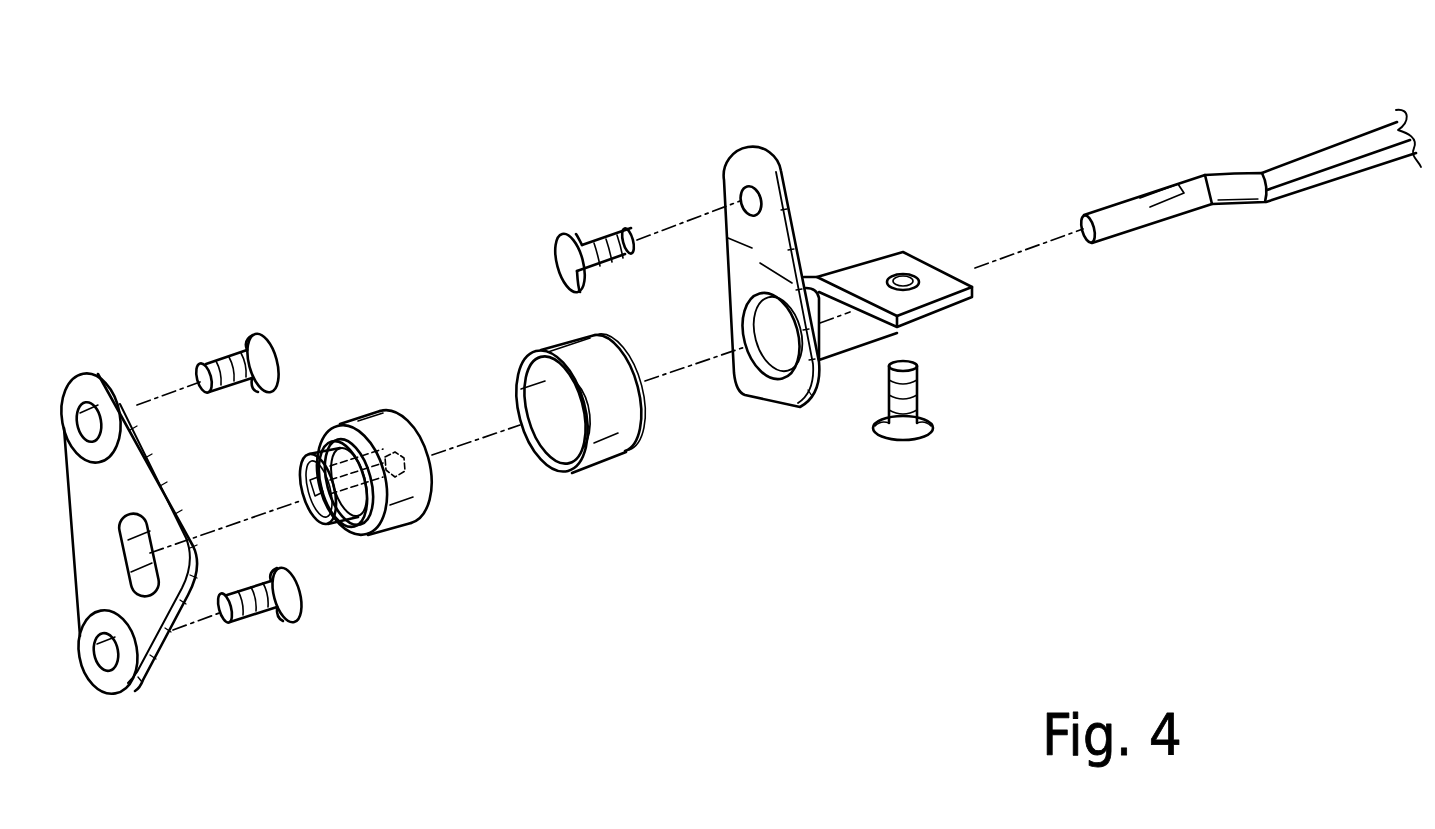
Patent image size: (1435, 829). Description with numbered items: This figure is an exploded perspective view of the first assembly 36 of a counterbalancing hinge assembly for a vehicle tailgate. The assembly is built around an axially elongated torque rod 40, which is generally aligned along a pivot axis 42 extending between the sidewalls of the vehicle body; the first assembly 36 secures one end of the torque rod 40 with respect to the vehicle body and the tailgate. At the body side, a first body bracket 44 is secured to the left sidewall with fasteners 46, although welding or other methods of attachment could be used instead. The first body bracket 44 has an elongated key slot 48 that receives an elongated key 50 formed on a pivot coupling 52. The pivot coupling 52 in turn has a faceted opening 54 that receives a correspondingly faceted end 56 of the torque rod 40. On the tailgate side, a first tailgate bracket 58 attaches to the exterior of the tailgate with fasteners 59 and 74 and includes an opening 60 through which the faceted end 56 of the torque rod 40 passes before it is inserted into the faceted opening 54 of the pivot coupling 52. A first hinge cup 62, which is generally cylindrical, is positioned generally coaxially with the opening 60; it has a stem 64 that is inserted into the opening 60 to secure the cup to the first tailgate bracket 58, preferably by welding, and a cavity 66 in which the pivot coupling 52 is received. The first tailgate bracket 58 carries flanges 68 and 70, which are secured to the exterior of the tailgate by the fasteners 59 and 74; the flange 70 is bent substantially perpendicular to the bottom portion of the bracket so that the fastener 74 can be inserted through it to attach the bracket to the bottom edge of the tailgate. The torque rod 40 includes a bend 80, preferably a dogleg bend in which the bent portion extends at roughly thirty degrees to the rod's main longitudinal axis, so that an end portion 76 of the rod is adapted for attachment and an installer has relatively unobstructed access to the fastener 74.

The first assembly 36 is at (492, 158).
The torque rod 40 is at (1350, 143).
The pivot axis 42 is at (962, 238).
The first body bracket 44 is at (140, 686).
The fasteners 46 is at (263, 335).
The elongated key slot 48 is at (143, 537).
The elongated key 50 is at (342, 517).
The pivot coupling 52 is at (392, 530).
The faceted opening 54 is at (417, 468).
The faceted end 56 is at (1112, 193).
The first tailgate bracket 58 is at (788, 400).
The fastener 59 is at (565, 231).
The opening 60 is at (750, 320).
The first hinge cup 62 is at (606, 450).
The stem 64 is at (643, 375).
The cavity 66 is at (558, 447).
The flange 68 is at (747, 152).
The flange 70 is at (943, 312).
The fastener 74 is at (903, 440).
The end portion 76 is at (1197, 230).
The bend 80 is at (1231, 174).